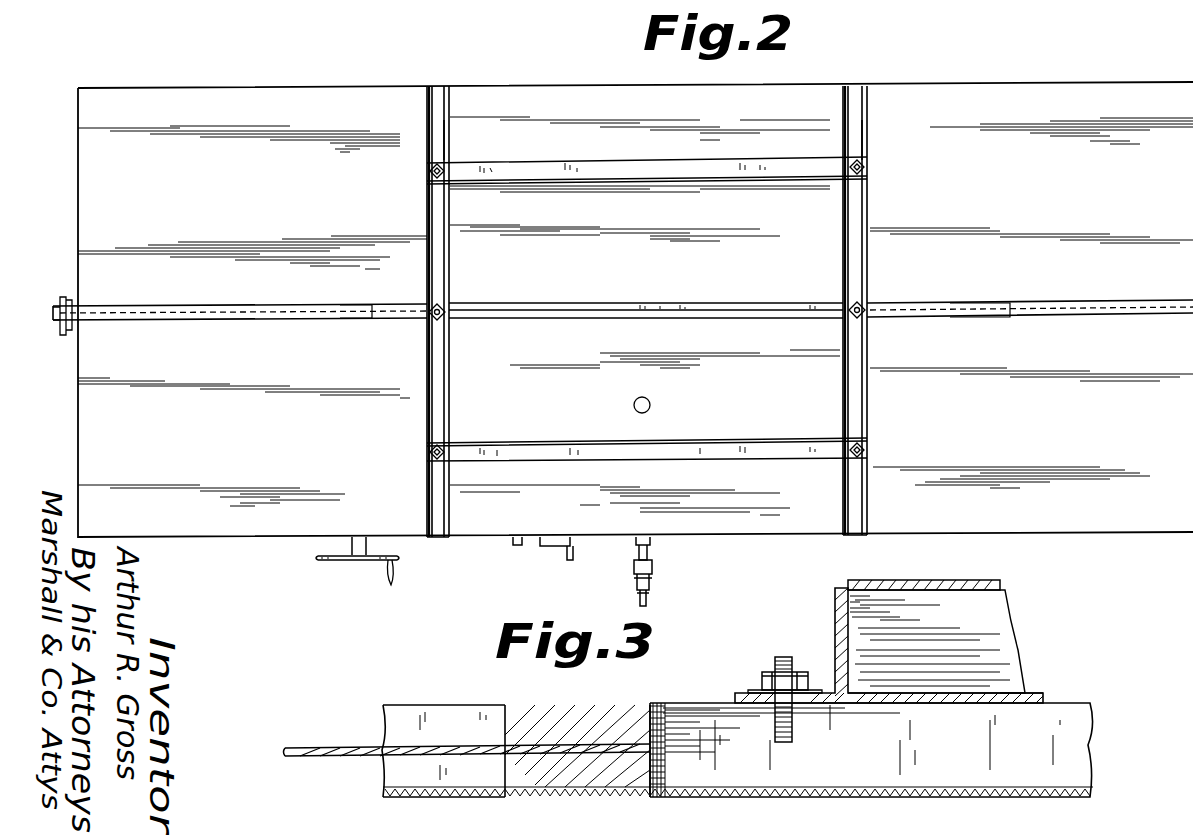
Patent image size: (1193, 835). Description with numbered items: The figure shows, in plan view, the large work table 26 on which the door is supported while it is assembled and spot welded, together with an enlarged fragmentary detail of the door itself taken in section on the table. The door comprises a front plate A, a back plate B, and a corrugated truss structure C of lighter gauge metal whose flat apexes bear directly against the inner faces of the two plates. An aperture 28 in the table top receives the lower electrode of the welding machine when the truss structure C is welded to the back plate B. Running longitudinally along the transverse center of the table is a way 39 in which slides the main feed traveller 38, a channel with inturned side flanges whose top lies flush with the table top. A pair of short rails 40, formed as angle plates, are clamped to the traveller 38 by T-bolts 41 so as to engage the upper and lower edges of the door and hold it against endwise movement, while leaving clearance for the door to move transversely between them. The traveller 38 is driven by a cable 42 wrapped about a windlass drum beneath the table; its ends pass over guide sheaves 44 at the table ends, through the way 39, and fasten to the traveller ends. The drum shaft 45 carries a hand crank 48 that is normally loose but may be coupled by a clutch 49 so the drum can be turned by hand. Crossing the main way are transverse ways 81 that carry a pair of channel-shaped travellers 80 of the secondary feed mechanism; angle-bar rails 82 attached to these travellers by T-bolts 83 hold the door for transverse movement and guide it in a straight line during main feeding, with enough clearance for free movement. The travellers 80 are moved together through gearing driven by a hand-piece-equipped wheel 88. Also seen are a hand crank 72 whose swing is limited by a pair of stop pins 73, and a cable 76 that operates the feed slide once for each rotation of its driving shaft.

In FIG. 2, the work table 26 is at (635, 309).
In FIG. 2, the aperture 28 is at (650, 406).
In FIG. 2, the traveller 38 is at (768, 304).
In FIG. 3, the traveller 38 is at (738, 750).
In FIG. 2, the way 39 is at (175, 322).
In FIG. 3, the way 39 is at (737, 750).
In FIG. 2, the short rails 40 is at (452, 302).
In FIG. 3, the short rails 40 is at (835, 611).
In FIG. 2, the T-bolts 41 is at (432, 322).
In FIG. 3, the T-bolts 41 is at (795, 657).
In FIG. 2, the cable 42 is at (350, 308).
In FIG. 2, the guide sheaves 44 is at (66, 330).
In FIG. 2, the shaft 45 is at (655, 548).
In FIG. 2, the hand crank 48 is at (653, 578).
In FIG. 2, the clutch 49 is at (636, 560).
In FIG. 2, the hand crank 72 is at (556, 548).
In FIG. 2, the stop pins 73 is at (518, 546).
In FIG. 3, the cable 76 is at (340, 748).
In FIG. 2, the travellers 80 is at (446, 426).
In FIG. 2, the ways 81 is at (445, 130).
In FIG. 2, the rails 82 is at (558, 168).
In FIG. 2, the T-bolts 83 is at (428, 171).
In FIG. 2, the hand-piece-equipped wheel 88 is at (395, 562).
In FIG. 3, the front plate A is at (945, 580).
In FIG. 3, the back plate B is at (1035, 693).
In FIG. 3, the truss structure C is at (1012, 612).